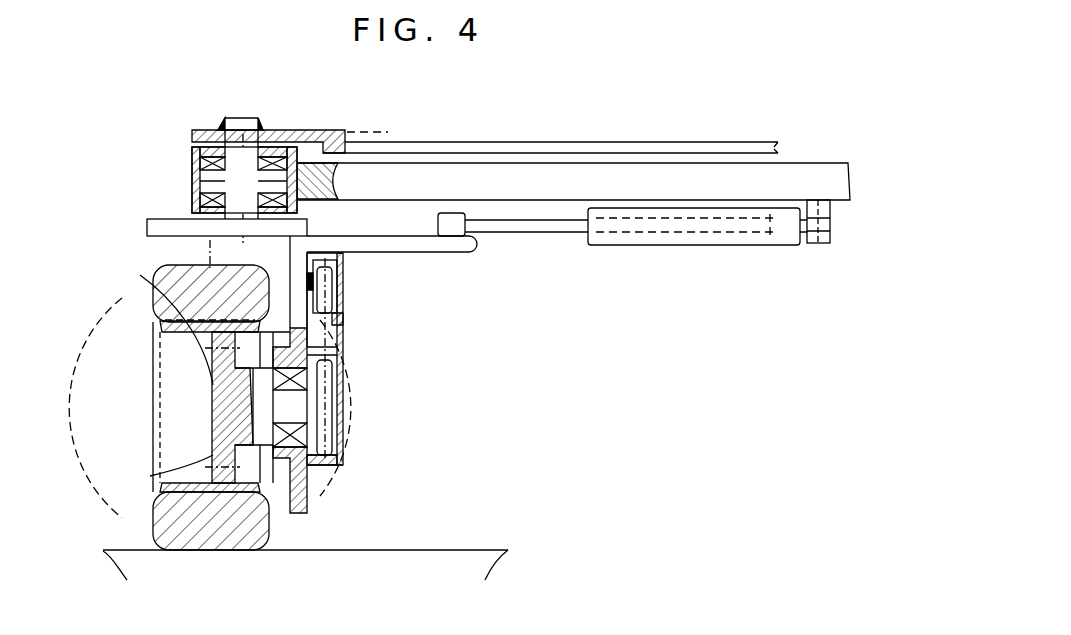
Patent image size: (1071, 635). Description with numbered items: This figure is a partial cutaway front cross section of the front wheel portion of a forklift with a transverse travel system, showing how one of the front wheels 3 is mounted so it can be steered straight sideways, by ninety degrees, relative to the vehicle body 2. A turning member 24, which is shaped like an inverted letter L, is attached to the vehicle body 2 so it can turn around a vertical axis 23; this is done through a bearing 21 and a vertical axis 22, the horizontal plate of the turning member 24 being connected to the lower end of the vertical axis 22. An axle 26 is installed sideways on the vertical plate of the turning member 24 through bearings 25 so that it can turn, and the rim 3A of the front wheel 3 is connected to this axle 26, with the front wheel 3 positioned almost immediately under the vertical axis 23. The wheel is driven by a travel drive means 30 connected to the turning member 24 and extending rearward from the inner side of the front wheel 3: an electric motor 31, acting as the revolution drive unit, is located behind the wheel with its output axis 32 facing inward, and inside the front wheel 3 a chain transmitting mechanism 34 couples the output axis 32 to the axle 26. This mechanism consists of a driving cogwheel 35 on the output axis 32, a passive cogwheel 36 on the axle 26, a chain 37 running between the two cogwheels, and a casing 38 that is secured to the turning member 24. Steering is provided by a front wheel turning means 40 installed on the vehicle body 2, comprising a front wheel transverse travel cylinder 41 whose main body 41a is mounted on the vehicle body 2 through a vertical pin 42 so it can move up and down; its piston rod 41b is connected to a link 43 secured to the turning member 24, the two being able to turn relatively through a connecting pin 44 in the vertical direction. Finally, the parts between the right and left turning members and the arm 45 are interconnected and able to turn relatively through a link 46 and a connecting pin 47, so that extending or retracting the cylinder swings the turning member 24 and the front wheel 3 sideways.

The vehicle body 2 is at (800, 172).
The front wheel 3 is at (220, 535).
The rim 3A is at (150, 477).
The bearing 21 is at (192, 163).
The vertical axis 22 is at (235, 120).
The vertical axis 23 is at (258, 118).
The turning member 24 is at (296, 530).
The bearing 25 is at (318, 470).
The axle 26 is at (212, 385).
The travel drive means 30 is at (378, 357).
The electric motor 31 is at (190, 262).
The output axis 32 is at (334, 294).
The chain transmitting mechanism 34 is at (350, 405).
The driving cogwheel 35 is at (332, 306).
The passive cogwheel 36 is at (335, 445).
The chain 37 is at (345, 355).
The casing 38 is at (323, 467).
The front wheel turning means 40 is at (606, 260).
The front wheel transverse travel cylinder 41 is at (662, 247).
The main body 41a is at (733, 247).
The piston rod 41b is at (540, 235).
The vertical pin 42 is at (828, 245).
The link 43 is at (405, 252).
The connecting pin 44 is at (478, 247).
The arm 45 is at (591, 141).
The link 46 is at (294, 130).
The connecting pin 47 is at (386, 132).